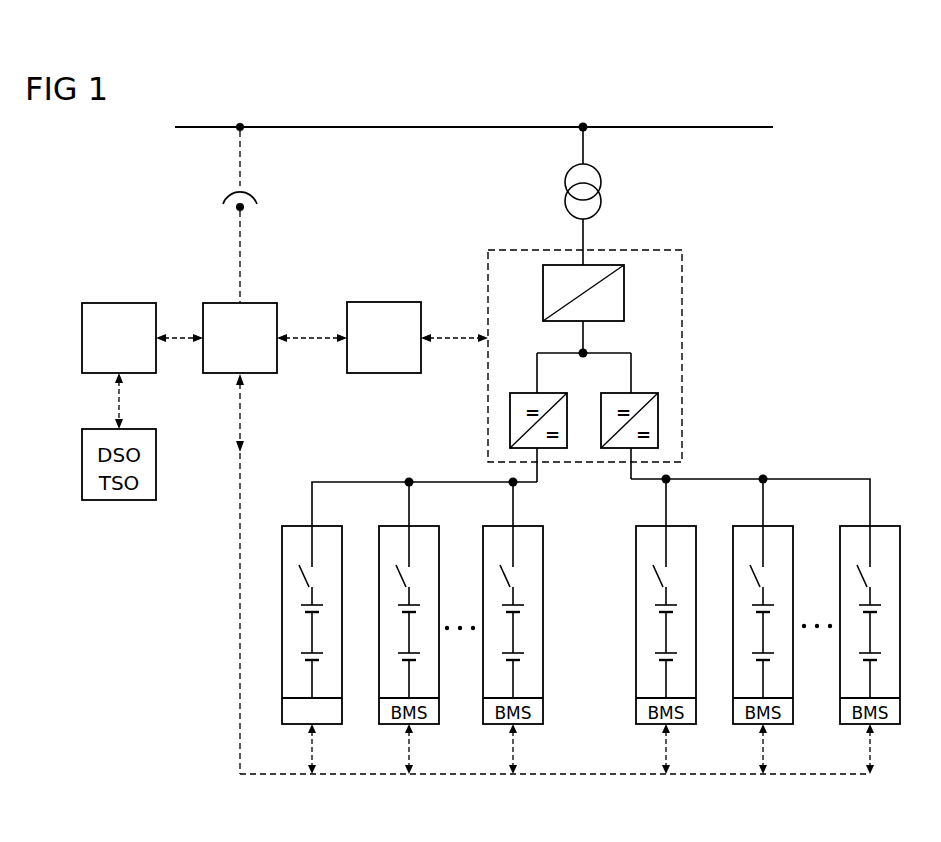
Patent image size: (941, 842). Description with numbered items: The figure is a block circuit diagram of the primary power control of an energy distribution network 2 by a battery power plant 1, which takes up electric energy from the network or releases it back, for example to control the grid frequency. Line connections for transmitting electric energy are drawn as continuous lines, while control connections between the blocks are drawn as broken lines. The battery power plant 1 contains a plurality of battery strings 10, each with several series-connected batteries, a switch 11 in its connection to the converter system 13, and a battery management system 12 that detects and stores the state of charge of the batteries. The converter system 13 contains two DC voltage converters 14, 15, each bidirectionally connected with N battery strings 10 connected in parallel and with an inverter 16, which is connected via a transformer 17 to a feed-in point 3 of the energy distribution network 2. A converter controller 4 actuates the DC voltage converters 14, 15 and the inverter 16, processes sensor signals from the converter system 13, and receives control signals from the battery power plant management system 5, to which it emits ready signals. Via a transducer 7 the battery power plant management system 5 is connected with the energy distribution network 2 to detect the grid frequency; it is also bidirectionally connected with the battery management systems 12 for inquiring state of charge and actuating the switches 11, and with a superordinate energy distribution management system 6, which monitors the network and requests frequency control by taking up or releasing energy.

The battery power plant 1 is at (796, 402).
The energy distribution network 2 is at (718, 127).
The feed-in point 3 is at (586, 124).
The converter controller 4 is at (376, 310).
The battery power plant management system 5 is at (255, 310).
The superordinate energy distribution management system 6 is at (128, 316).
The transducer 7 is at (259, 197).
The battery string 10 is at (300, 630).
The switch 11 is at (300, 578).
The battery management system 12 is at (282, 706).
The converter system 13 is at (598, 336).
The DC voltage converter 14 is at (521, 414).
The DC voltage converter 15 is at (649, 420).
The inverter 16 is at (594, 290).
The transformer 17 is at (602, 181).